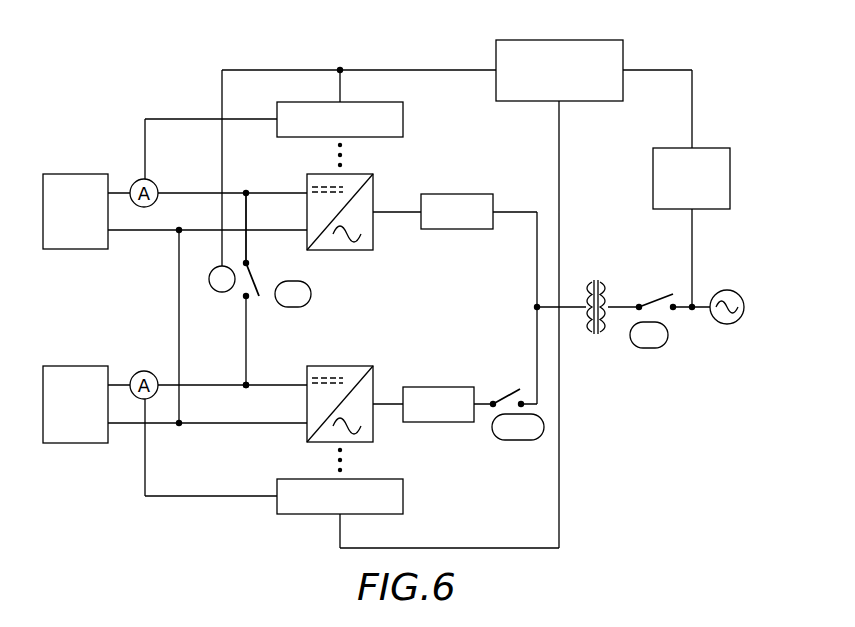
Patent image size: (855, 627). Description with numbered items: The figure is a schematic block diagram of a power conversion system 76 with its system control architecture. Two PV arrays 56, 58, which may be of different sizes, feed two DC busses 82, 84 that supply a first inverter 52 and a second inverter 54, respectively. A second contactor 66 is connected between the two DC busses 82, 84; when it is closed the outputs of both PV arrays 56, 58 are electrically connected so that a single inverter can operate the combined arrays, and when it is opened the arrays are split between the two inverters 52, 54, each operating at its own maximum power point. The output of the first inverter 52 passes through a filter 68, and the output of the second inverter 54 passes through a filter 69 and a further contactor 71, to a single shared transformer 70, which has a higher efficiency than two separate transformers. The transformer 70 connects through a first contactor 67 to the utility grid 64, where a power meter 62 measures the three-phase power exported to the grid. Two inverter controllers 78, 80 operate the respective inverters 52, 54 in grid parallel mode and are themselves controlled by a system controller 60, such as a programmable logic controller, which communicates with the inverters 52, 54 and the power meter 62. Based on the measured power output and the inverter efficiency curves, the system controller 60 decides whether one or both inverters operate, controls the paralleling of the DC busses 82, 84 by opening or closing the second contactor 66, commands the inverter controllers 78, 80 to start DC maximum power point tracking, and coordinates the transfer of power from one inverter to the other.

The first inverter 52 is at (357, 250).
The second inverter 54 is at (357, 366).
The PV array 56 is at (53, 173).
The PV array 58 is at (53, 365).
The system controller 60 is at (593, 40).
The power meter 62 is at (653, 180).
The utility grid 64 is at (738, 293).
The contactor K2 66 is at (300, 307).
The contactor K1 67 is at (651, 348).
The filter 68 is at (470, 194).
The filter 69 is at (452, 387).
The transformer 70 is at (596, 340).
The contactor K1-2 71 is at (517, 440).
The power conversion system 76 is at (646, 460).
The inverter controller 78 is at (403, 119).
The inverter controller 80 is at (403, 503).
The DC bus 82 is at (246, 191).
The DC bus 84 is at (244, 382).